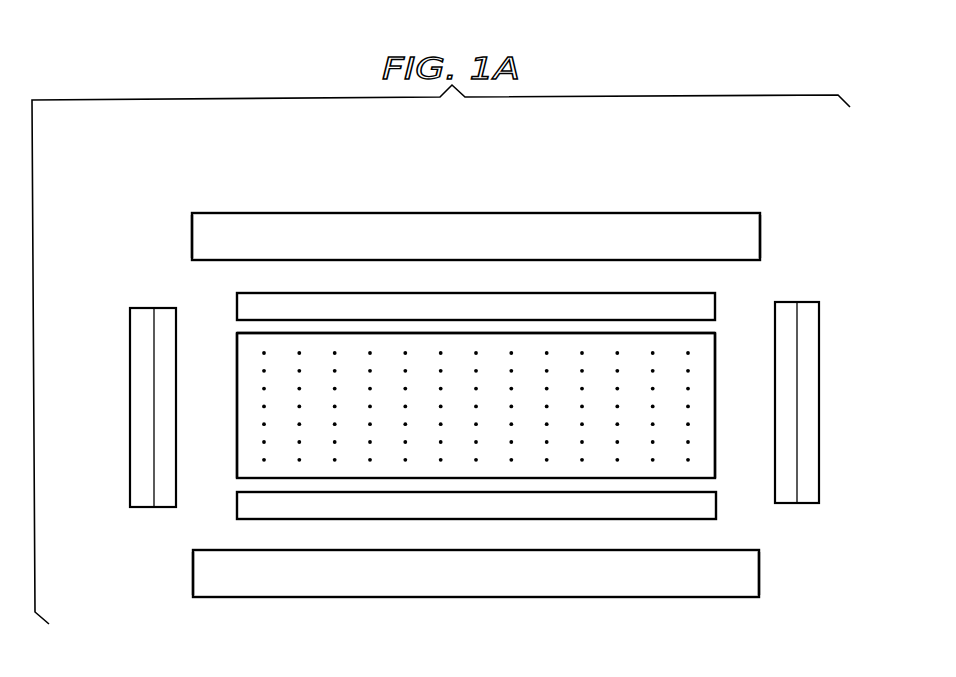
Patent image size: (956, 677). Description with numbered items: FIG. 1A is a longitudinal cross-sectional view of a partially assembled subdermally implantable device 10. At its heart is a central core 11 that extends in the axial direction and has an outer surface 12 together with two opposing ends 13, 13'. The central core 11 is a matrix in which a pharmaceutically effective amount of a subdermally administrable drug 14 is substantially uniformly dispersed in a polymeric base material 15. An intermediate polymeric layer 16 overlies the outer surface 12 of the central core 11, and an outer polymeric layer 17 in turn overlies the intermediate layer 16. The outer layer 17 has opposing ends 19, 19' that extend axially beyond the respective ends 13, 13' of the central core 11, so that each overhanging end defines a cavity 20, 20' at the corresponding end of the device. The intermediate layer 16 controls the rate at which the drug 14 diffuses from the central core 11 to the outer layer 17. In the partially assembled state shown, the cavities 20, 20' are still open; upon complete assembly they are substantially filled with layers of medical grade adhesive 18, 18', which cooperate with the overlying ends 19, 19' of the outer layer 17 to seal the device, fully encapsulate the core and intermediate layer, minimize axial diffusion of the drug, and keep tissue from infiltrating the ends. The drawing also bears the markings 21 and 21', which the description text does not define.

The subdermally implantable device 10 is at (128, 197).
The central core 11 is at (226, 398).
The outer surface 12 is at (240, 334).
The opposing end 13 is at (738, 414).
The opposing end 13' is at (210, 405).
The subdermally administrable drug 14 is at (688, 350).
The polymeric base material 15 is at (700, 431).
The intermediate polymeric layer 16 is at (237, 303).
The outer polymeric layer 17 is at (254, 213).
The medical grade adhesive 18 is at (827, 402).
The medical grade adhesive 18' is at (115, 407).
The opposing end of outer layer 19 is at (792, 398).
The opposing end of outer layer 19' is at (153, 414).
The cavity 20 is at (786, 530).
The cavity 20' is at (155, 533).
The groove in right end plate 21 is at (832, 402).
The groove in left end plate 21' is at (109, 407).